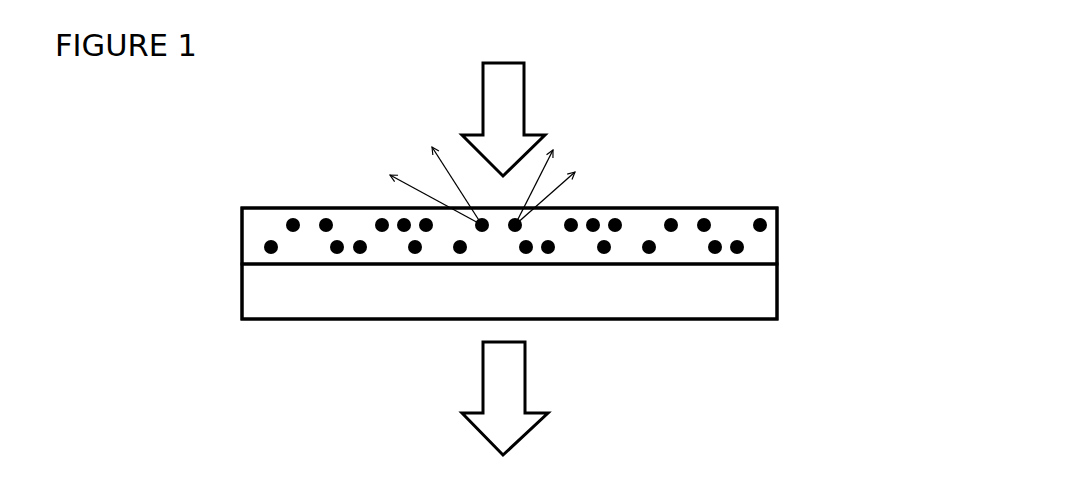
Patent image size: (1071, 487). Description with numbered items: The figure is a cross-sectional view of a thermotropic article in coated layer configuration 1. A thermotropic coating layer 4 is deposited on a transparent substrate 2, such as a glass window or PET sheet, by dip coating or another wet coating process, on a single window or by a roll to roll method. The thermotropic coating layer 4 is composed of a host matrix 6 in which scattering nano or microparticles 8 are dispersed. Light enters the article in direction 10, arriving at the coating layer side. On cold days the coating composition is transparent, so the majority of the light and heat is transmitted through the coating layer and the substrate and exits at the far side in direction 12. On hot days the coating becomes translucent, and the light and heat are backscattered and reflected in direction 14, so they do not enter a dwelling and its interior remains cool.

The coated layer configuration 1 is at (320, 142).
The transparent substrate 2 is at (697, 290).
The thermotropic coating layer 4 is at (642, 220).
The host matrix 6 is at (732, 223).
The scattering nano or microparticles 8 is at (677, 218).
The light entry direction 10 is at (503, 119).
The light transmission direction 12 is at (505, 398).
The backscatter-reflection direction 14 is at (489, 174).